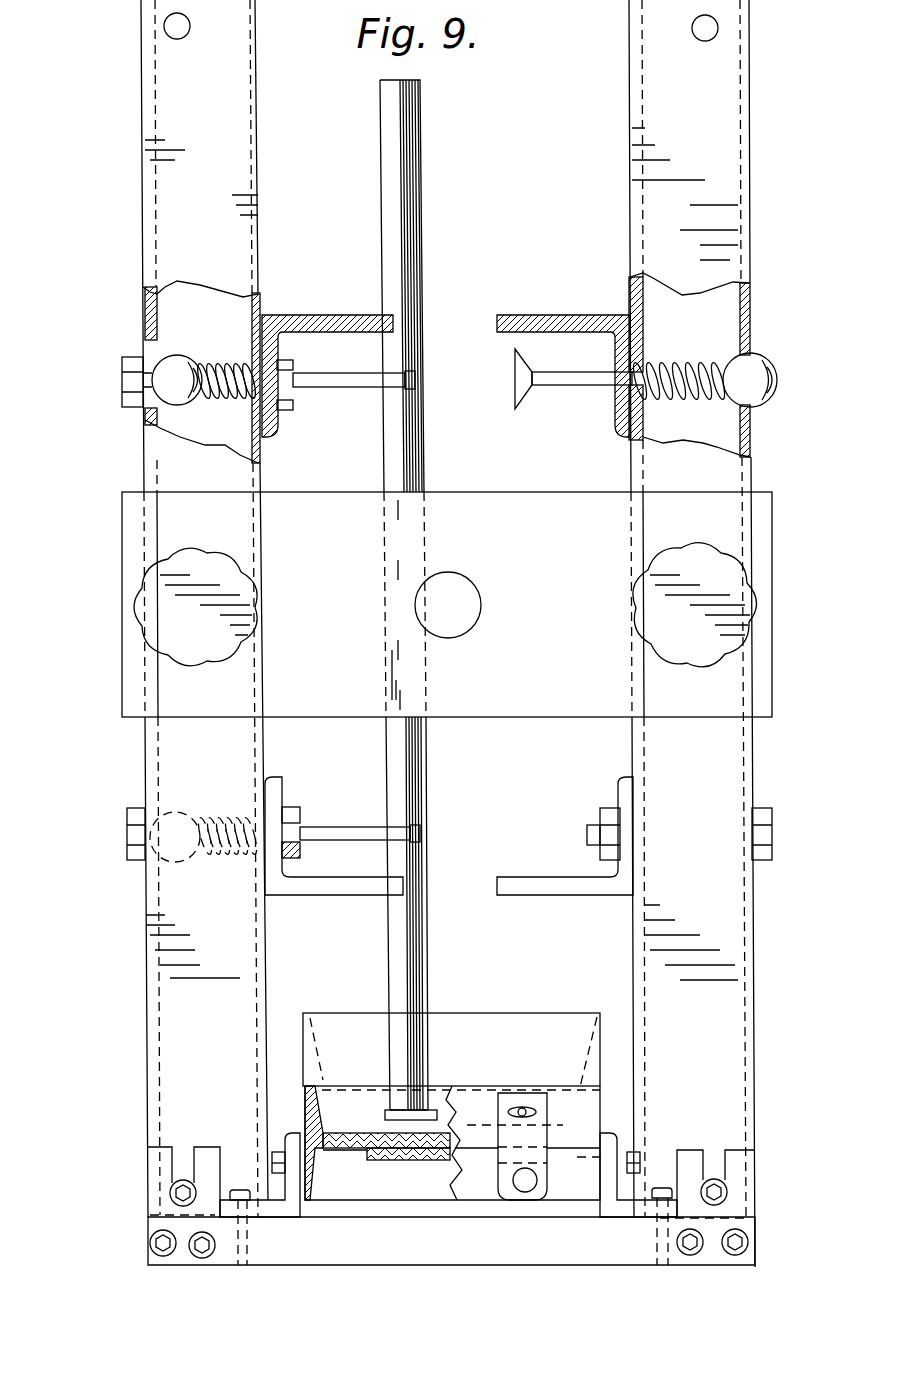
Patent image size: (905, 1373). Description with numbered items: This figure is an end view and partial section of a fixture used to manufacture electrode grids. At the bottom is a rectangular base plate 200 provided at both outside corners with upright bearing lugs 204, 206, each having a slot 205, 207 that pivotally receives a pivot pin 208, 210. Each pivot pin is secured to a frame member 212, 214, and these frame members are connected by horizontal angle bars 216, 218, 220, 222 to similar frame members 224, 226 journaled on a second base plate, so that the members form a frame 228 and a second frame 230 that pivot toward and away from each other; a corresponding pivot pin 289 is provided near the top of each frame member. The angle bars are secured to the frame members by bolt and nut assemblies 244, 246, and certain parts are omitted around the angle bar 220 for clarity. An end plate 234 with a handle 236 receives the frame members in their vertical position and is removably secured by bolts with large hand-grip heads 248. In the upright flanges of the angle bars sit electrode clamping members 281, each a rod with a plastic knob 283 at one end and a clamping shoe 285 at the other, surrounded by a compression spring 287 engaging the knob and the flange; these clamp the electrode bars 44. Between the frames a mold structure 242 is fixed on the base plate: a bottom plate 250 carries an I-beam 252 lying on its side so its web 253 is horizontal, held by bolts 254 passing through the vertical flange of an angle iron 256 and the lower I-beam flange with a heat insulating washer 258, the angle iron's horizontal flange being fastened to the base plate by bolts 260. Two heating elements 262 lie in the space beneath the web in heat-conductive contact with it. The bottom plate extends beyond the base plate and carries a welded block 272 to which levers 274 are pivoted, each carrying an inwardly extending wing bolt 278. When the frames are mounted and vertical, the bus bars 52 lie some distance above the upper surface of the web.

The electrode bar 44 is at (421, 245).
The bus bar 52 is at (438, 1108).
The base plate 200 is at (485, 1246).
The bearing lug 204 is at (160, 1207).
The slot 205 is at (175, 1157).
The bearing lug 206 is at (745, 1205).
The slot 207 is at (735, 1162).
The pivot pin 208 is at (170, 1190).
The pivot pin 210 is at (735, 1187).
The frame member 212 is at (165, 462).
The frame member 214 is at (730, 463).
The angle bar 216 is at (310, 892).
The angle bar 218 is at (320, 313).
The angle bar 220 is at (548, 895).
The angle bar 222 is at (545, 313).
The frame member 224 is at (172, 116).
The frame member 226 is at (735, 143).
The frame 228 is at (130, 287).
The second frame 230 is at (765, 281).
The end plate 234 is at (335, 505).
The handle 236 is at (470, 580).
The mold structure 242 is at (539, 1086).
The bolt 244 is at (128, 360).
The nut 246 is at (293, 402).
The hand-grip head 248 is at (245, 648).
The bottom plate 250 is at (365, 1210).
The I-beam 252 is at (310, 1105).
The web 253 is at (360, 1130).
The bolt 254 is at (275, 1158).
The angle iron 256 is at (240, 1216).
The heat insulating washer 258 is at (300, 1205).
The bolt 260 is at (240, 1190).
The heating element 262 is at (415, 1163).
The block 272 is at (490, 1195).
The lever 274 is at (500, 1152).
The wing bolt 278 is at (536, 1112).
The electrode clamping member 281 is at (515, 375).
The plastic knob 283 is at (150, 402).
The clamping shoe 285 is at (515, 390).
The compression spring 287 is at (215, 360).
The pivot pin 289 is at (164, 26).